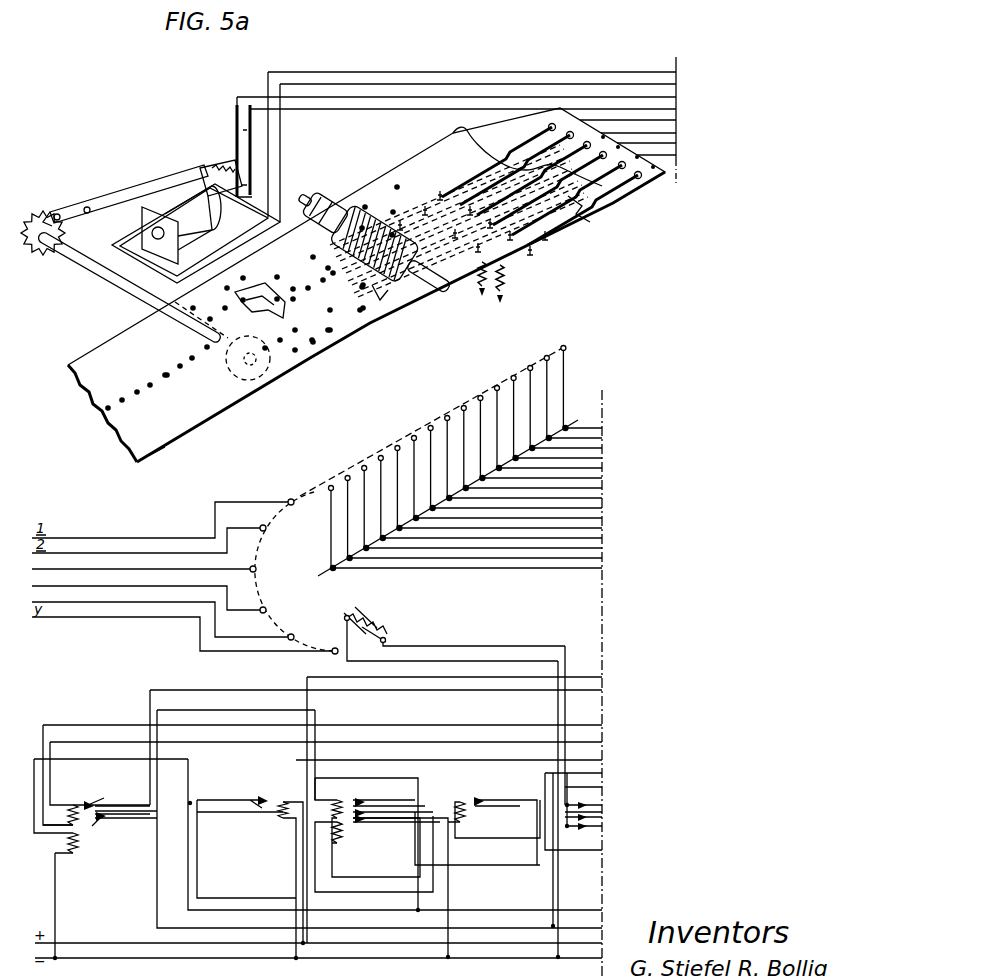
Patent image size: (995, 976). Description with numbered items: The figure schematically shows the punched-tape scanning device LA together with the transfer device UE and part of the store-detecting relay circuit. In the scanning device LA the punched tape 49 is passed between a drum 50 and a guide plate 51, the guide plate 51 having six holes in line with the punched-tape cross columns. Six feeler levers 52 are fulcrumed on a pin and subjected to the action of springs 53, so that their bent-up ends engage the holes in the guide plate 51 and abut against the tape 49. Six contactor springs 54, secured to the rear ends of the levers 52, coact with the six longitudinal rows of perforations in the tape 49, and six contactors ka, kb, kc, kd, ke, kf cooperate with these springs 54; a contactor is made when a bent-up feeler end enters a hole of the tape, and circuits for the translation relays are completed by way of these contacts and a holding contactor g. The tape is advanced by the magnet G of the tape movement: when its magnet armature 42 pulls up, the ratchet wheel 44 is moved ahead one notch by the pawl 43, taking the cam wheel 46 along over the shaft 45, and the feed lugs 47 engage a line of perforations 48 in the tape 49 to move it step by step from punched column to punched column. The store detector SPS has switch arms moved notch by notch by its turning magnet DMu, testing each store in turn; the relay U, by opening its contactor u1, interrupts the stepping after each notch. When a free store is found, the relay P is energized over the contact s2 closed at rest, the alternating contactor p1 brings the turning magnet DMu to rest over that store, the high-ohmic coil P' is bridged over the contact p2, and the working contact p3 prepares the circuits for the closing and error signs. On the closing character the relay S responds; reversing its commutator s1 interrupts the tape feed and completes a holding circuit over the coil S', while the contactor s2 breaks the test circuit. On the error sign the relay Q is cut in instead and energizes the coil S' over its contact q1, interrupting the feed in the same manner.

The magnet armature 42 is at (209, 178).
The pawl 43 is at (60, 210).
The ratchet wheel 44 is at (64, 234).
The shaft 45 is at (93, 272).
The cam wheel 46 is at (228, 380).
The feed lugs 47 is at (217, 365).
The line of perforations 48 is at (123, 399).
The punched tape 49 is at (173, 440).
The drum 50 is at (330, 200).
The guide plate 51 is at (437, 300).
The feeler levers 52 is at (470, 214).
The springs 53 is at (490, 284).
The contactor springs 54 is at (586, 212).
The holding contactor g is at (252, 172).
The magnet of the tape movement G is at (196, 233).
The punched-tape scanning device LA is at (372, 143).
The contactor ka is at (526, 153).
The contactor kb is at (568, 162).
The contactor kc is at (576, 174).
The contactor kd is at (584, 184).
The contactor ke is at (594, 195).
The contactor kf is at (606, 210).
The transfer device UE is at (606, 365).
The store detector SPS is at (328, 541).
The turning magnet DMu is at (454, 629).
The relay S is at (96, 823).
The high-ohmic holding coil S' is at (85, 852).
The contactor s1 is at (124, 823).
The contactor s2 is at (120, 796).
The relay Q is at (278, 815).
The contact q1 is at (262, 803).
The relay P is at (367, 836).
The high-ohmic coil P' is at (374, 854).
The alternating contactor p1 is at (365, 824).
The contact p2 is at (368, 812).
The working contact p3 is at (362, 801).
The relay U is at (464, 823).
The contactor u1 is at (476, 802).